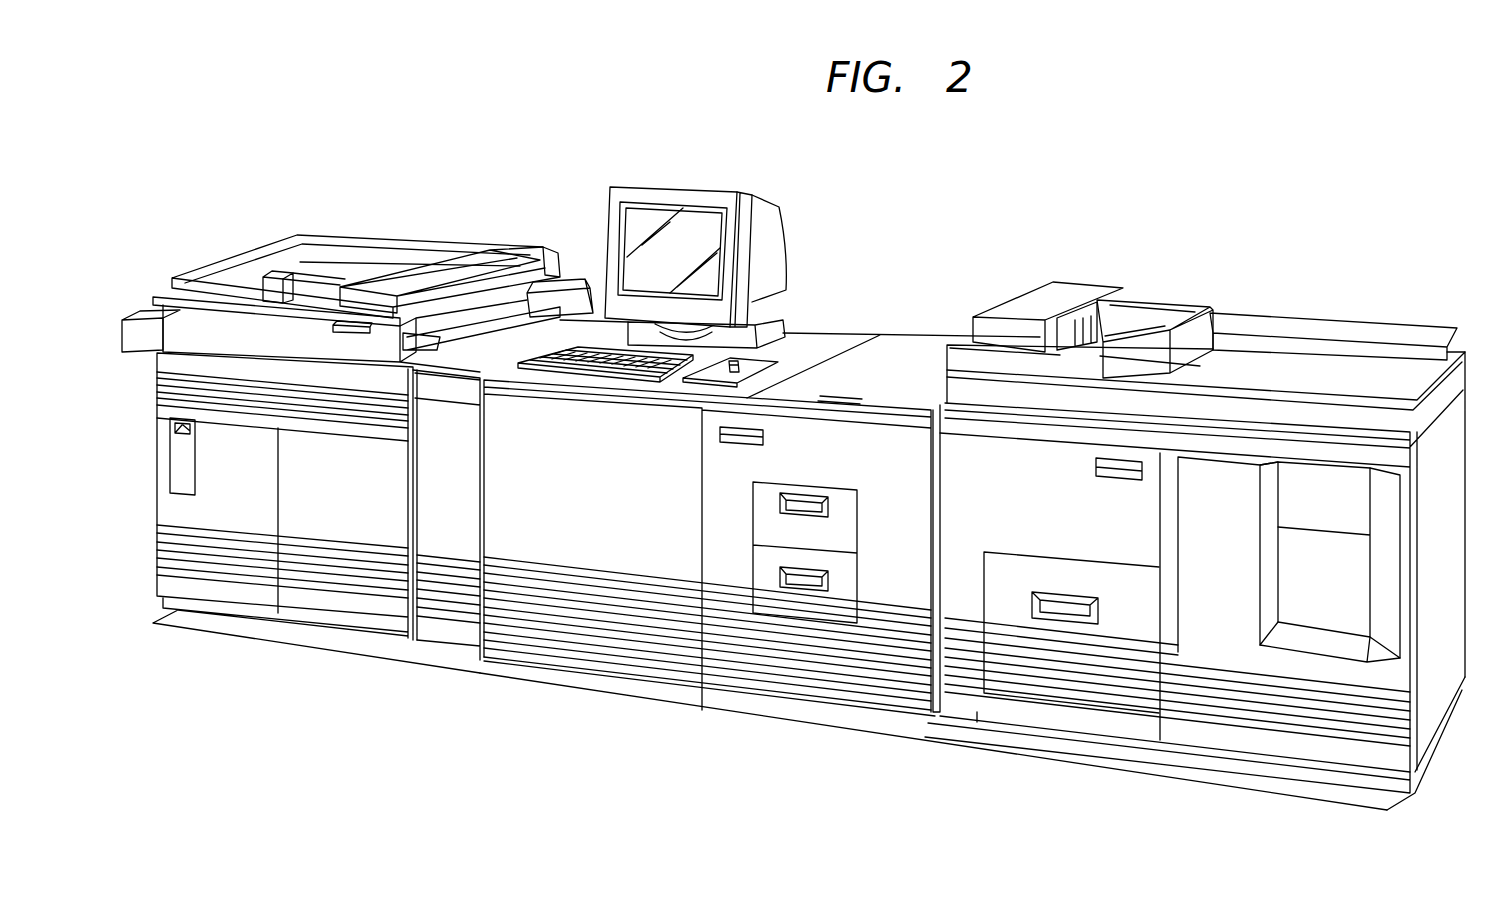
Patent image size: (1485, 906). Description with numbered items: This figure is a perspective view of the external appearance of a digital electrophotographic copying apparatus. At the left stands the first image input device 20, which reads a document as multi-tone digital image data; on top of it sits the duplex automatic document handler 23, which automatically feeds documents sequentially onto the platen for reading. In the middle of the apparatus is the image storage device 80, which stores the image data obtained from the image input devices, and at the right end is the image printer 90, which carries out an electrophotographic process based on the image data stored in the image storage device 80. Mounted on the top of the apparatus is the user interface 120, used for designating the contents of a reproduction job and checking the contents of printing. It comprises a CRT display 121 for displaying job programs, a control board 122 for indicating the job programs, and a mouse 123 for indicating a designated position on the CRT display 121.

The first image input device 20 is at (366, 226).
The duplex automatic document handler 23 is at (430, 250).
The image storage device 80 is at (896, 282).
The image printer 90 is at (1287, 282).
The user interface 120 is at (693, 178).
The CRT display 121 is at (635, 236).
The control board 122 is at (582, 370).
The mouse 123 is at (696, 382).